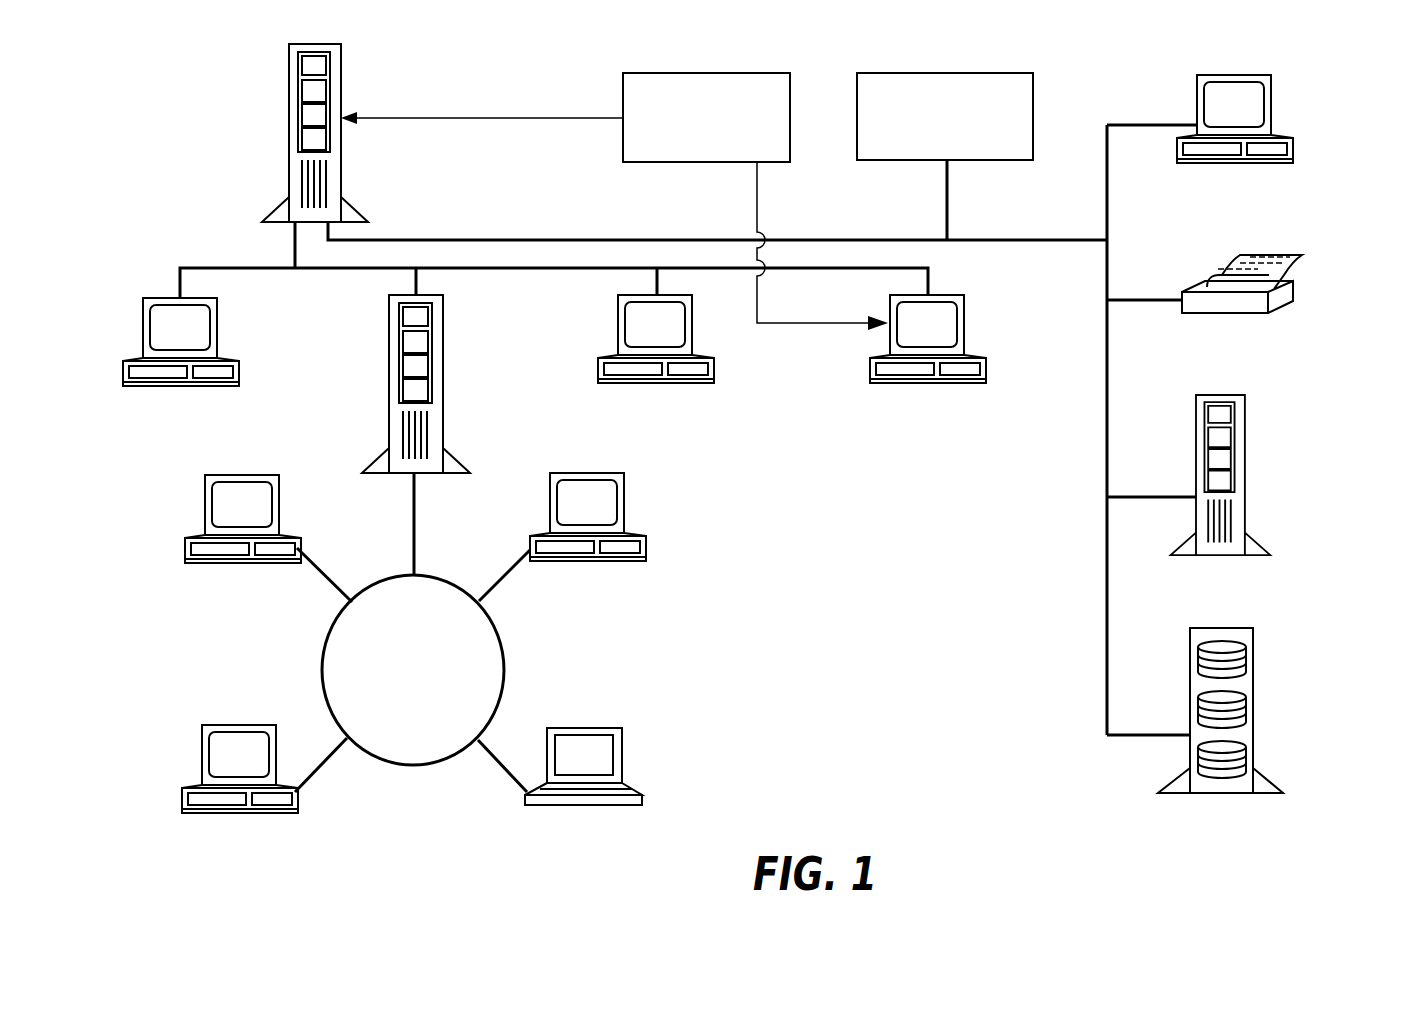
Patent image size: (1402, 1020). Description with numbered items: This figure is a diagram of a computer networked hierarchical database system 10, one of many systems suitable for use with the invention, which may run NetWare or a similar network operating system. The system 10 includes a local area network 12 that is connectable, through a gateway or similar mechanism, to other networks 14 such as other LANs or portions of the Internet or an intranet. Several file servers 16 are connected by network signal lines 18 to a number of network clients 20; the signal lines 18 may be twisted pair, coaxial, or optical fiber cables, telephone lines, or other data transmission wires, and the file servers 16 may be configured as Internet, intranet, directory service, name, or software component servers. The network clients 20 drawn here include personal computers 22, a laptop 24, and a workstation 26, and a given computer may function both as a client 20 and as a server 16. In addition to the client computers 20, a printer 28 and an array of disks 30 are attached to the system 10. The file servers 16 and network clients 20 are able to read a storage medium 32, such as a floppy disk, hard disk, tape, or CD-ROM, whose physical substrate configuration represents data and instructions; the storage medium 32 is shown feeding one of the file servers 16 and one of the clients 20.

The computer networked hierarchical database system 10 is at (197, 131).
The local area network 12 is at (255, 270).
The other networks 14 is at (940, 73).
The file server 16 is at (816, 297).
The network signal line 18 is at (465, 240).
The network client 20 is at (730, 439).
The personal computer 22 is at (279, 505).
The laptop 24 is at (622, 745).
The workstation 26 is at (1245, 470).
The printer 28 is at (1293, 290).
The array of disks 30 is at (1253, 705).
The storage medium 32 is at (697, 73).